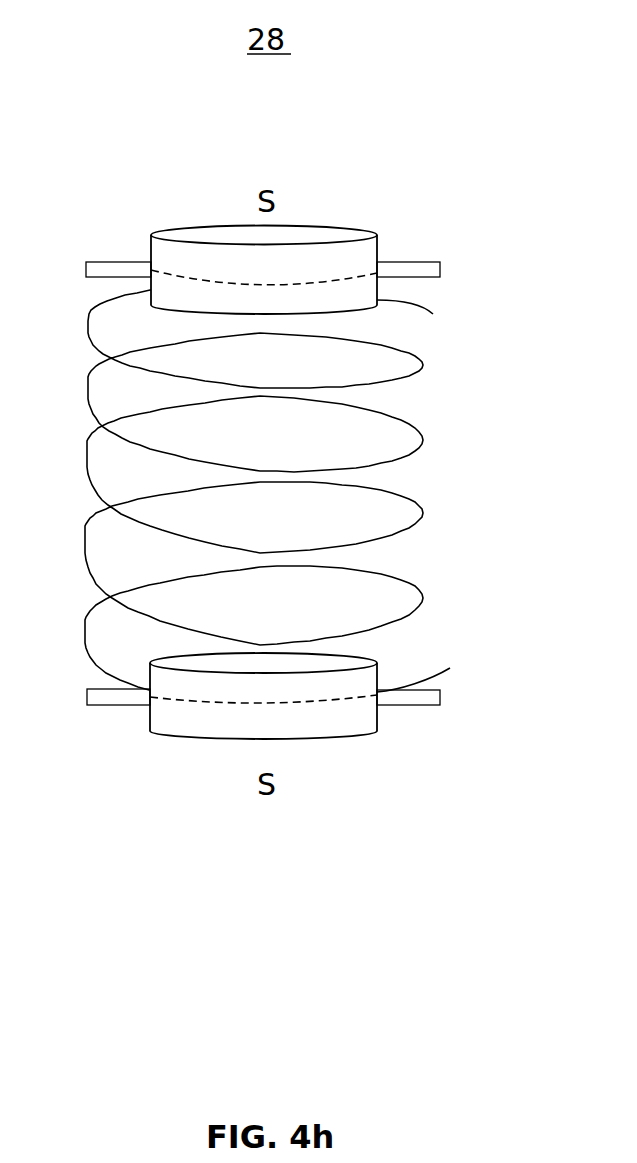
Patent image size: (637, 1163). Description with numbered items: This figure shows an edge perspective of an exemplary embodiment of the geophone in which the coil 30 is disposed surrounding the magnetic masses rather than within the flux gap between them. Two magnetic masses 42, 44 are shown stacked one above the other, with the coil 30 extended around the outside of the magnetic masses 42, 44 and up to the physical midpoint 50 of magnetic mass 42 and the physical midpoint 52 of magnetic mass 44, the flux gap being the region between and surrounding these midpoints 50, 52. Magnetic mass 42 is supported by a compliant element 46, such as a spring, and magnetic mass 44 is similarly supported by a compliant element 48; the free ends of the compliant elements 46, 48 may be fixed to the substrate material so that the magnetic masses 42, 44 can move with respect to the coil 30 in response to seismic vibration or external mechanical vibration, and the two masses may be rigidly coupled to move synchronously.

The coil 30 is at (422, 500).
The magnetic mass 42 is at (342, 230).
The magnetic mass 44 is at (323, 738).
The compliant element 46 is at (432, 262).
The compliant element 48 is at (440, 705).
The physical midpoint 50 is at (362, 277).
The physical midpoint 52 is at (177, 700).